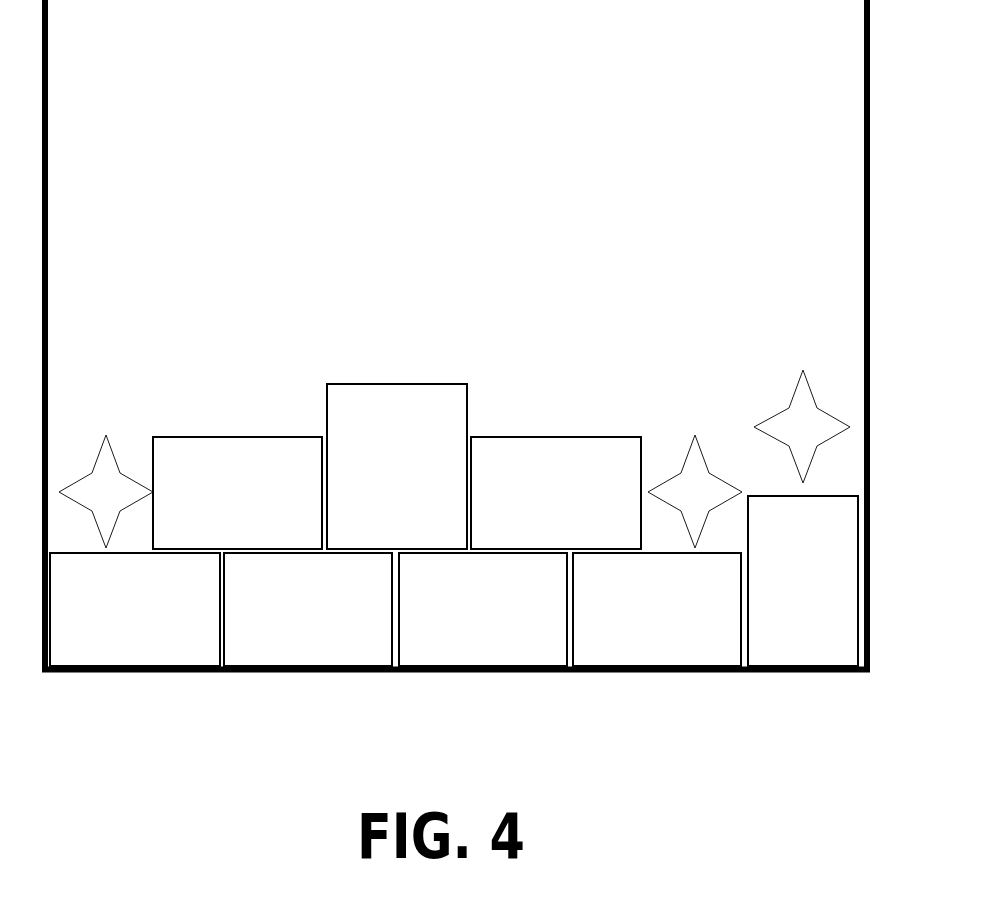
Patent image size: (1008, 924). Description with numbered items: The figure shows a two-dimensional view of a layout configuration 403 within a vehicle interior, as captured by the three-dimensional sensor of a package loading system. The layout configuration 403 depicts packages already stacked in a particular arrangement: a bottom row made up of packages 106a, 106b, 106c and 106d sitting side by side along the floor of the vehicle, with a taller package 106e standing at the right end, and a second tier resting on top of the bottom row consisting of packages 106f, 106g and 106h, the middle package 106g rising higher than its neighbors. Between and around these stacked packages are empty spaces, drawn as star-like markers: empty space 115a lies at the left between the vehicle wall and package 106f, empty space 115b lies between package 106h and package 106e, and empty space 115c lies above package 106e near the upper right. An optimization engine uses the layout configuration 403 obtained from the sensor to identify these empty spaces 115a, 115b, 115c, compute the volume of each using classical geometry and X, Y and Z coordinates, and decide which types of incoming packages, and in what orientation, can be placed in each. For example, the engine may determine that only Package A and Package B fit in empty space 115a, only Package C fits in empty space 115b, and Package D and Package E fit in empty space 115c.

The layout configuration 403 is at (806, 743).
The package 106a is at (111, 620).
The package 106b is at (284, 620).
The package 106c is at (459, 620).
The package 106d is at (633, 620).
The package 106e is at (779, 590).
The package 106f is at (216, 502).
The package 106g is at (373, 476).
The package 106h is at (532, 502).
The empty space 115a is at (84, 502).
The empty space 115b is at (673, 502).
The empty space 115c is at (781, 436).